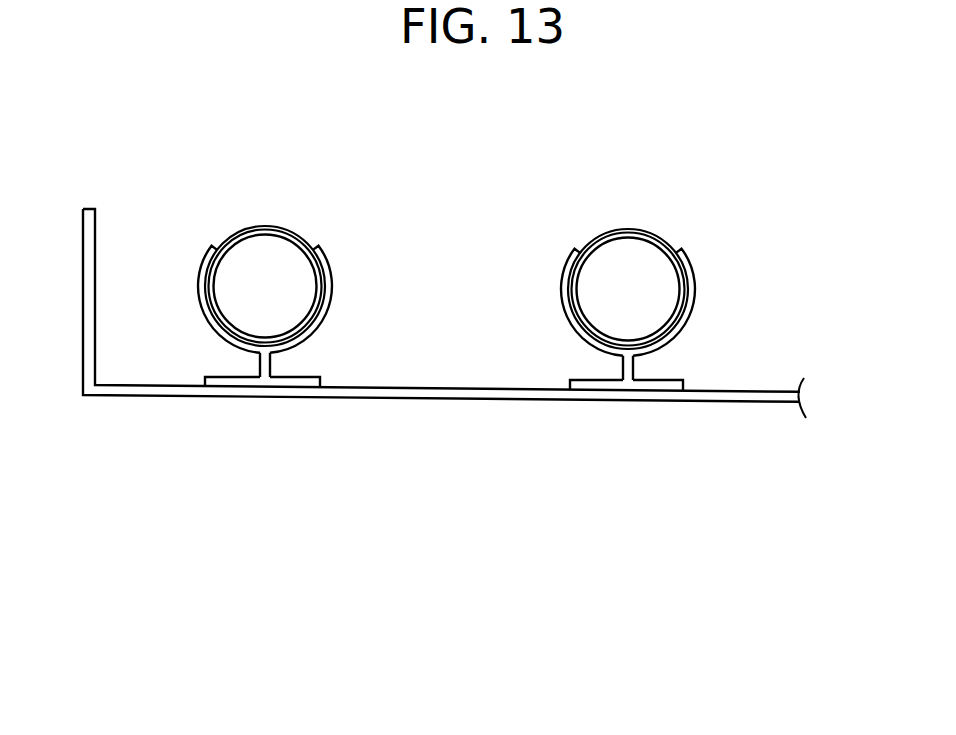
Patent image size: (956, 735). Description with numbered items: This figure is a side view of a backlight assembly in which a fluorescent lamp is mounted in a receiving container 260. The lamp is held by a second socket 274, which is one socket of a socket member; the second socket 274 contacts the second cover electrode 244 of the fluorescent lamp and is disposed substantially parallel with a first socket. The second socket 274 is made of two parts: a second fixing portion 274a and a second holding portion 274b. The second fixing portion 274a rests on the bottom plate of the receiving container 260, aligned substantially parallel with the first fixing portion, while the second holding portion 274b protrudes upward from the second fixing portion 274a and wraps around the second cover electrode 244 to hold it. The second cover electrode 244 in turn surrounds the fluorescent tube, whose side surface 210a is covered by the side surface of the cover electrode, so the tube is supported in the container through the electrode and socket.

The side surface of fluorescent tube 210a is at (287, 256).
The second cover electrode 244 is at (266, 227).
The receiving container 260 is at (462, 391).
The second socket 274 is at (232, 389).
The second fixing portion 274a is at (222, 380).
The second holding portion 274b is at (200, 316).